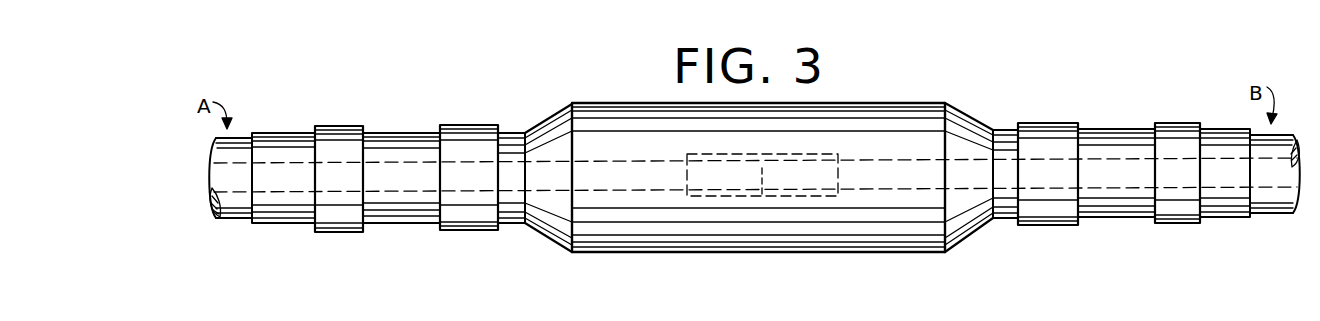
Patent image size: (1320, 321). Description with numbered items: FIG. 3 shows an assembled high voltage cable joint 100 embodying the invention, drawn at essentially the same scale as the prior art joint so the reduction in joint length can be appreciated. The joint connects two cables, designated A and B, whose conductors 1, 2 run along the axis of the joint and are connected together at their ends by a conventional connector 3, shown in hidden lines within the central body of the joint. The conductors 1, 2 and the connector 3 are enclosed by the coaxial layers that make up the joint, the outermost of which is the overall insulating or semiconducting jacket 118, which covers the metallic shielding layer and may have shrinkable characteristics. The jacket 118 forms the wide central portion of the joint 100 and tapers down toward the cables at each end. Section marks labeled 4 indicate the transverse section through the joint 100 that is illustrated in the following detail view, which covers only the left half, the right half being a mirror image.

The conductor 1 is at (632, 161).
The conductor 2 is at (884, 144).
The connector 3 is at (692, 157).
The section line 4- 4 is at (812, 176).
The insulating or semiconducting jacket 118 is at (665, 253).
The cable joint 100 is at (946, 254).